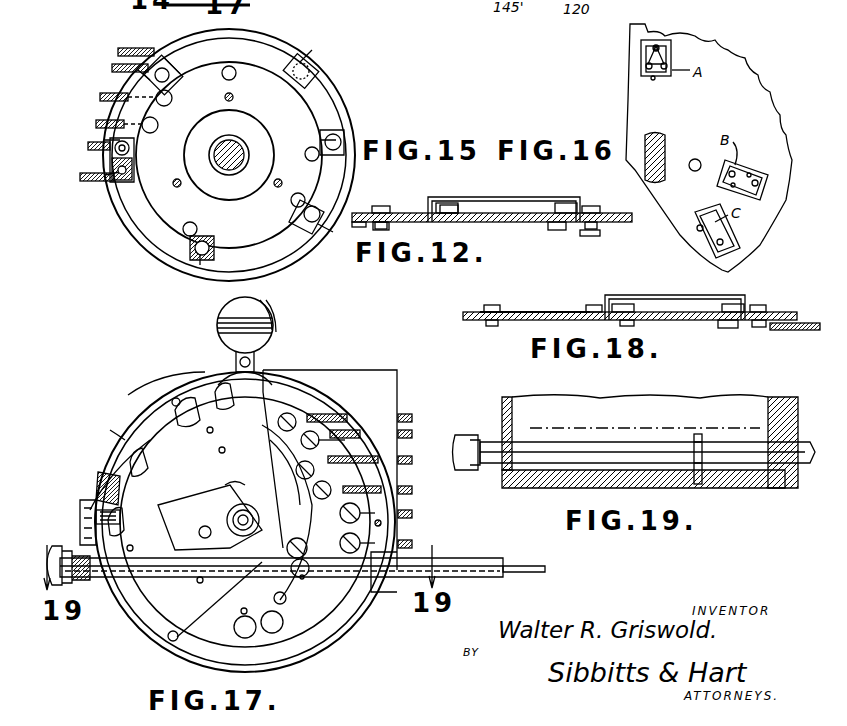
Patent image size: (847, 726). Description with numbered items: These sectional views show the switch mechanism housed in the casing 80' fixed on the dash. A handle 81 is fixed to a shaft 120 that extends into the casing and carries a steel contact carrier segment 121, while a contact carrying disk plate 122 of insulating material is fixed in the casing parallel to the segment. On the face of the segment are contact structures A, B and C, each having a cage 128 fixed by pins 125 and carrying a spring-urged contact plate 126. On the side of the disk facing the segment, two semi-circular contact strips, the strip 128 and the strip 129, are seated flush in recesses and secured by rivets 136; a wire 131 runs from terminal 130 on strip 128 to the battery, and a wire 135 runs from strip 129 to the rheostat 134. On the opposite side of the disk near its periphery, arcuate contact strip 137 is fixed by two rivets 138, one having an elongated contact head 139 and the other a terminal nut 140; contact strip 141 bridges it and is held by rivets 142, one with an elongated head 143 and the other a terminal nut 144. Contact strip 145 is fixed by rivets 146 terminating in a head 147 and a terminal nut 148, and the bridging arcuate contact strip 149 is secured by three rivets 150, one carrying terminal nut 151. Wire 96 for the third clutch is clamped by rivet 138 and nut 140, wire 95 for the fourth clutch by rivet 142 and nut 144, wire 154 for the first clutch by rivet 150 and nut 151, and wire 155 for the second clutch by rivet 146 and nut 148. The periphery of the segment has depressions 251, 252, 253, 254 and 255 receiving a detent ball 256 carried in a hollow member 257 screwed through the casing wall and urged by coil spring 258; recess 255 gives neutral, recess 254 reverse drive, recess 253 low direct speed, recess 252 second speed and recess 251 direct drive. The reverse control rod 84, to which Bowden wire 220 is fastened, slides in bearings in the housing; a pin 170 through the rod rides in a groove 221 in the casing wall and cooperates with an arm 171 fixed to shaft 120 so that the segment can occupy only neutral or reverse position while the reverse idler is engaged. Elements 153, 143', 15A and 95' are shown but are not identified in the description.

In FIG. 15, the wire 95 is at (127, 36).
In FIG. 15, the wire 96 is at (150, 66).
In FIG. 17, the wire 96 is at (405, 414).
In FIG. 15, the arcuate contact strip 137 is at (276, 45).
In FIG. 12, the arcuate contact strip 137 is at (490, 197).
In FIG. 15, the contact carrying disk plate 122 is at (265, 92).
In FIG. 12, the contact carrying disk plate 122 is at (360, 213).
In FIG. 18, the contact carrying disk plate 122 is at (470, 312).
In FIG. 17, the contact carrying disk plate 122 is at (320, 430).
In FIG. 15, the rivets 138 is at (314, 68).
In FIG. 12, the rivets 138 is at (450, 203).
In FIG. 15, the contact strip 141 is at (328, 120).
In FIG. 12, the contact strip 141 is at (436, 197).
In FIG. 15, the shaft 120 is at (242, 145).
In FIG. 17, the shaft 120 is at (243, 504).
In FIG. 15, the wire 131 is at (100, 93).
In FIG. 17, the wire 131 is at (412, 458).
In FIG. 15, the screw 153 is at (96, 120).
In FIG. 15, the rheostat 134 is at (88, 142).
In FIG. 15, the wire 155 is at (92, 181).
In FIG. 17, the wire 155 is at (412, 540).
In FIG. 15, the contact strip 145 is at (165, 243).
In FIG. 18, the contact strip 145 is at (655, 295).
In FIG. 15, the bolt block 143' is at (321, 225).
In FIG. 12, the rivets 142 is at (385, 206).
In FIG. 12, the elongated contact head 139 is at (565, 203).
In FIG. 12, the terminal nut 140 is at (400, 234).
In FIG. 12, the terminal nut 144 is at (592, 236).
In FIG. 12, the elongated head 143 is at (352, 236).
In FIG. 16, the contact carrier segment 121 is at (630, 96).
In FIG. 17, the contact carrier segment 121 is at (297, 476).
In FIG. 16, the cage 128 is at (641, 60).
In FIG. 17, the cage 128 is at (282, 462).
In FIG. 16, the pins 125 is at (658, 44).
In FIG. 16, the contact plate 126 is at (668, 48).
In FIG. 16, the arm 171 is at (666, 138).
In FIG. 17, the arm 171 is at (210, 500).
In FIG. 18, the arcuate contact strip 149 is at (525, 312).
In FIG. 18, the rivets 150 is at (592, 305).
In FIG. 18, the rivets 146 is at (622, 304).
In FIG. 18, the head 147 is at (630, 326).
In FIG. 18, the terminal nut 148 is at (740, 328).
In FIG. 18, the terminal nut 151 is at (760, 327).
In FIG. 18, the plate 15A is at (802, 330).
In FIG. 19, the groove 221 is at (660, 480).
In FIG. 19, the rod 84 is at (808, 440).
In FIG. 17, the rod 84 is at (462, 558).
In FIG. 19, the pin 170 is at (700, 480).
In FIG. 17, the pin 170 is at (302, 576).
In FIG. 17, the casing 80' is at (330, 462).
In FIG. 17, the depression 252 is at (165, 405).
In FIG. 17, the depression 251 is at (218, 380).
In FIG. 17, the depression 253 is at (130, 425).
In FIG. 17, the depression 254 is at (125, 440).
In FIG. 17, the coil spring 258 is at (98, 472).
In FIG. 17, the hollow member 257 is at (80, 505).
In FIG. 17, the depression 255 is at (118, 514).
In FIG. 17, the detent ball 256 is at (150, 532).
In FIG. 17, the terminal 130 is at (318, 450).
In FIG. 17, the semi-circular contact strip 129 is at (333, 510).
In FIG. 17, the wire 135 is at (412, 488).
In FIG. 17, the wire 154 is at (412, 512).
In FIG. 17, the Bowden wire 220 is at (522, 566).
In FIG. 17, the rivets 136 is at (284, 602).
In FIG. 17, the handle 81 is at (270, 314).
In FIG. 17, the screw 95' is at (388, 420).